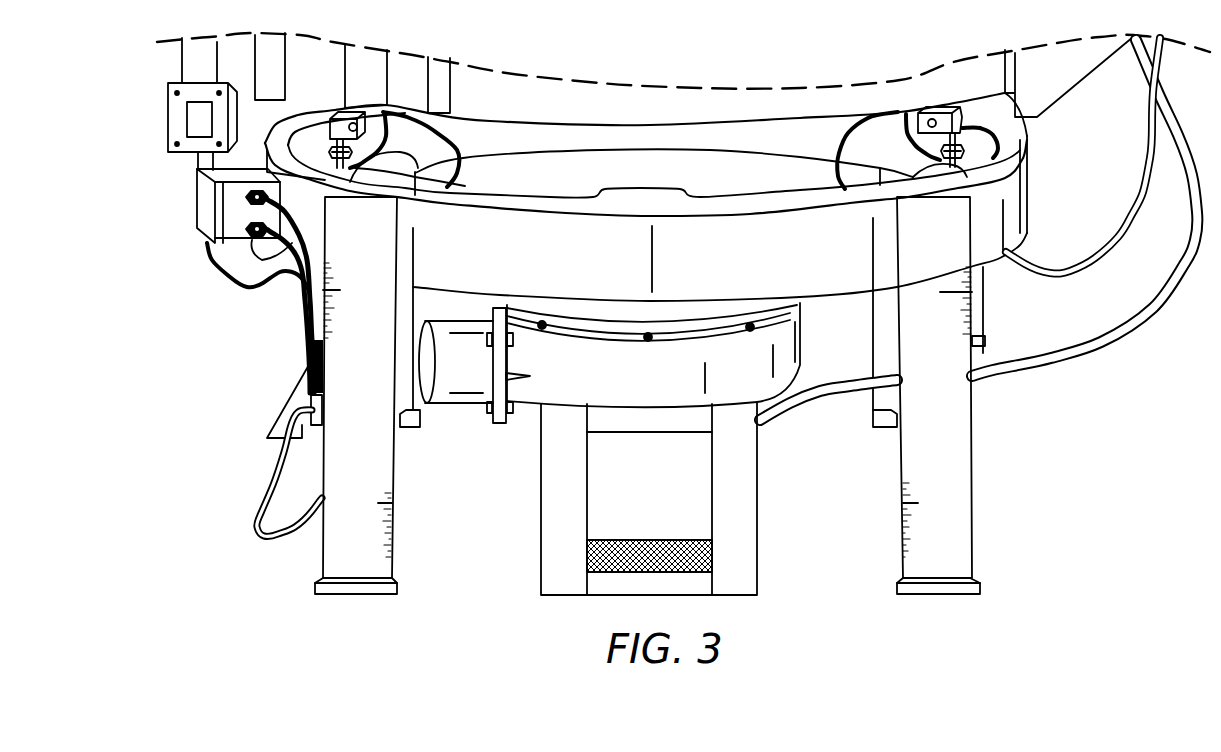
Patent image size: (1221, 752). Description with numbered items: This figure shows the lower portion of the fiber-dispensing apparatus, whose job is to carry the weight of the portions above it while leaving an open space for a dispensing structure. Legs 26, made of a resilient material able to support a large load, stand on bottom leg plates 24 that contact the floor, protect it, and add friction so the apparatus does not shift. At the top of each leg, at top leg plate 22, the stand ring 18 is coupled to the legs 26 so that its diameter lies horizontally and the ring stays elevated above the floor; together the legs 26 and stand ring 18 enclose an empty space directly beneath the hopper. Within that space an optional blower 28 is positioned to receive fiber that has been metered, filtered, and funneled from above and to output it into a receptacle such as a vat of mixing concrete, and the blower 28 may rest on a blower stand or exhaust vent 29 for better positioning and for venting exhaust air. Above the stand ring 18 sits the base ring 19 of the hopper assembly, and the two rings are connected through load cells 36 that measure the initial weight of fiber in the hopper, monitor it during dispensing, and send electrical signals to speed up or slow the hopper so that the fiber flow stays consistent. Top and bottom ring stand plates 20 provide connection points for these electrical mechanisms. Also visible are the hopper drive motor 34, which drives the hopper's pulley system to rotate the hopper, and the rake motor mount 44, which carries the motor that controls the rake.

The stand ring 18 is at (591, 270).
The base ring 19 is at (563, 101).
The ring stand plates 20 is at (255, 158).
The top leg plate 22 is at (337, 192).
The bottom leg plates 24 is at (360, 587).
The legs 26 is at (950, 507).
The blower 28 is at (557, 380).
The blower stand or exhaust vent 29 is at (553, 562).
The hopper drive motor 34 is at (197, 117).
The load cells 36 is at (388, 152).
The rake motor mount 44 is at (1060, 60).